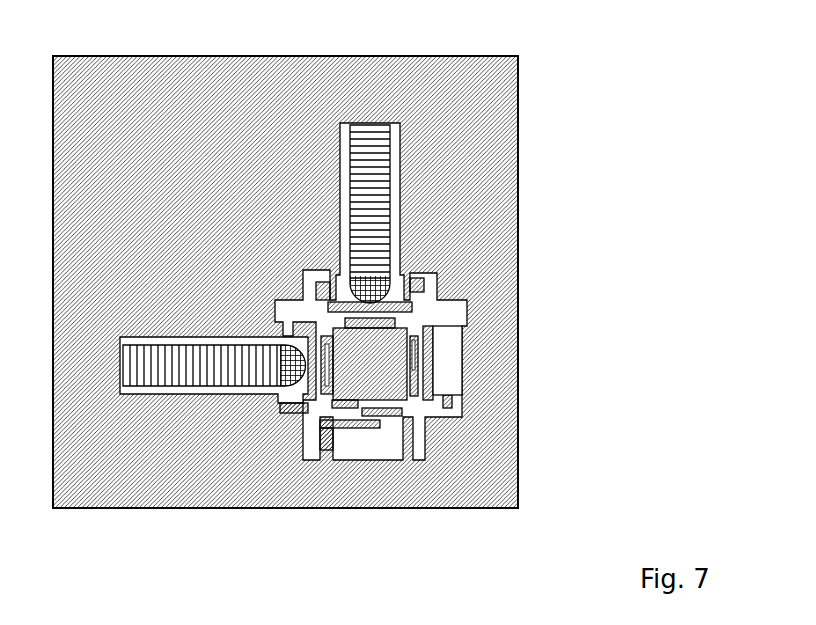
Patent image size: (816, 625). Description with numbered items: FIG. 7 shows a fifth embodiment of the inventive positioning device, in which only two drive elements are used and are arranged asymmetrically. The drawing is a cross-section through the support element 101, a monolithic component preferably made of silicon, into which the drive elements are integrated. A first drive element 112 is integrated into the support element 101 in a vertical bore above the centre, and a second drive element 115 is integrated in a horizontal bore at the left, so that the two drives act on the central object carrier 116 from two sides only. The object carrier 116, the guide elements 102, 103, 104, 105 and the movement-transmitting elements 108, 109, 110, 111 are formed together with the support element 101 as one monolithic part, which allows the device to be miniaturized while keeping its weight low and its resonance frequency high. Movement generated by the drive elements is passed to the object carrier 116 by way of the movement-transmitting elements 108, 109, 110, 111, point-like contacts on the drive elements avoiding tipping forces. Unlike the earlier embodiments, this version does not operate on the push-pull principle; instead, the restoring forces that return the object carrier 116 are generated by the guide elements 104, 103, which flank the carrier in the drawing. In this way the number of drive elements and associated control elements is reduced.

The support element 101 is at (150, 105).
The guide element 102 is at (370, 322).
The guide element 103 is at (413, 367).
The guide element 104 is at (372, 413).
The guide element 105 is at (330, 366).
The movement-transmitting element 108 is at (323, 297).
The movement-transmitting element 109 is at (450, 407).
The movement-transmitting element 110 is at (325, 440).
The movement-transmitting element 111 is at (287, 408).
The drive element 112 is at (363, 132).
The drive element 115 is at (148, 367).
The object carrier 116 is at (350, 375).